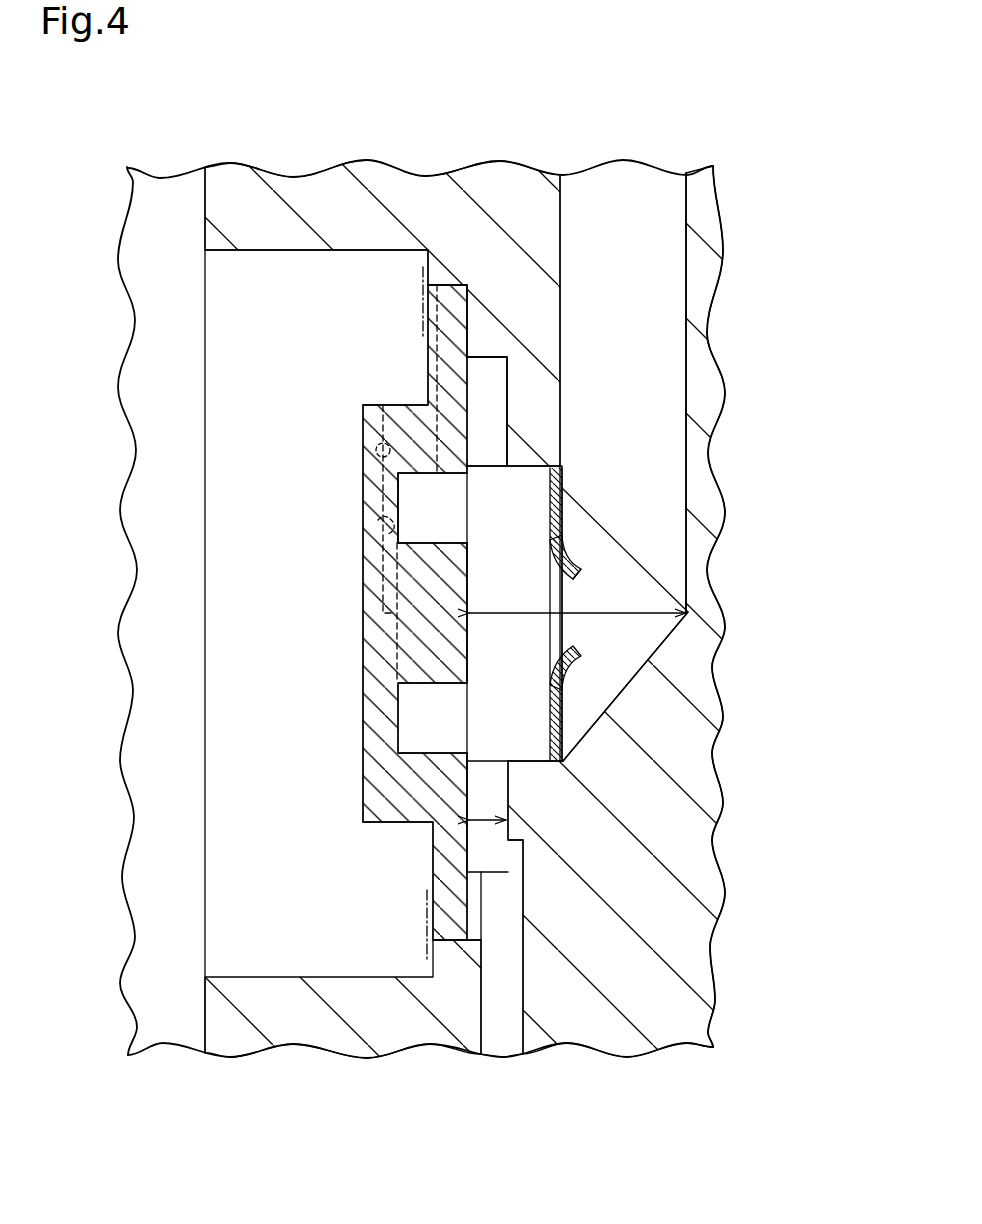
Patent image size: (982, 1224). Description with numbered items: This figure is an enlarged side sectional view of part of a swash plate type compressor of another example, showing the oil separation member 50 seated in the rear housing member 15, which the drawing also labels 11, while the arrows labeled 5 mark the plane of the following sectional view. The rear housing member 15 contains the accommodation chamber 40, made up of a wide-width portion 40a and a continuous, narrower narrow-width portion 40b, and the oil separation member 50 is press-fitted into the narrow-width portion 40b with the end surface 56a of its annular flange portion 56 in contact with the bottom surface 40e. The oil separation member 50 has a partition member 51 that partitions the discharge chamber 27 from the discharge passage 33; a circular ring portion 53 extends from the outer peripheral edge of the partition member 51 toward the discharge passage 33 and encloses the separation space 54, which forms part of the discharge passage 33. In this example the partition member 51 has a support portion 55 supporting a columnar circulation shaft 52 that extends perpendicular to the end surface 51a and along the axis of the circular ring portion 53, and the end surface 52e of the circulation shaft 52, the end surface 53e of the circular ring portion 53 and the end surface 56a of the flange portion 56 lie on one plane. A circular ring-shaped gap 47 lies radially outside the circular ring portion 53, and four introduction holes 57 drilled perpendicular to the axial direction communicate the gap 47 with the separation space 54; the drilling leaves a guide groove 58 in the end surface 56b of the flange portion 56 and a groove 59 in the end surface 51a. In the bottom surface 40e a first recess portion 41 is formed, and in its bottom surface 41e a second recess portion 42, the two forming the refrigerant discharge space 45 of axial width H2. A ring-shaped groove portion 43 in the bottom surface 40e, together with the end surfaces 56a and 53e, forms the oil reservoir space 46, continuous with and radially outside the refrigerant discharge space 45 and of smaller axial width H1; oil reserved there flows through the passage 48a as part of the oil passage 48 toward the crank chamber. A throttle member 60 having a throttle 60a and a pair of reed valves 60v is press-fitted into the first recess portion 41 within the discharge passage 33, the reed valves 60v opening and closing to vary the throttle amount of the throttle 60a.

The rear housing member 15 is at (697, 203).
The device body 11 is at (759, 392).
The discharge chamber 27 is at (415, 609).
The accommodation chamber 40 is at (533, 131).
The wide-width portion 40a is at (423, 253).
The narrow-width portion 40b is at (480, 293).
The bottom surface of the narrow-width portion 40e is at (450, 357).
The discharge passage 33 is at (690, 302).
The section line of FIG. 5 is at (423, 267).
The oil separation member 50 is at (470, 331).
The circular ring portion 53 is at (413, 417).
The end surface of the circular ring portion 53e is at (473, 418).
The guide groove 58 is at (430, 353).
The introduction hole 57 is at (375, 452).
The separation space 54 is at (417, 497).
The groove 59 is at (392, 527).
The end surface of the partition member 51a is at (400, 529).
The end surface of the circulation shaft 52e is at (470, 596).
The circulation shaft 52 is at (452, 637).
The support portion 55 is at (372, 636).
The partition member 51 is at (396, 712).
The end surface of the flange portion (partition side) 56b is at (433, 837).
The flange portion 56 is at (462, 928).
The end surface of the flange portion 56a is at (481, 898).
The gap 47 is at (387, 920).
The oil passage 48 is at (529, 988).
The passage 48a is at (502, 1030).
The ring-shaped groove portion 43 is at (502, 872).
The oil reservoir space 46 is at (484, 788).
The width of the oil reservoir space H1 is at (490, 831).
The bottom surface of the first recess portion 41e is at (548, 763).
The first recess portion 41 is at (545, 474).
The second recess portion 42 is at (688, 620).
The refrigerant discharge space 45 is at (499, 613).
The throttle member 60 is at (565, 505).
The reed valves 60v is at (570, 558).
The throttle 60a is at (577, 599).
The width of the refrigerant discharge space H2 is at (620, 612).